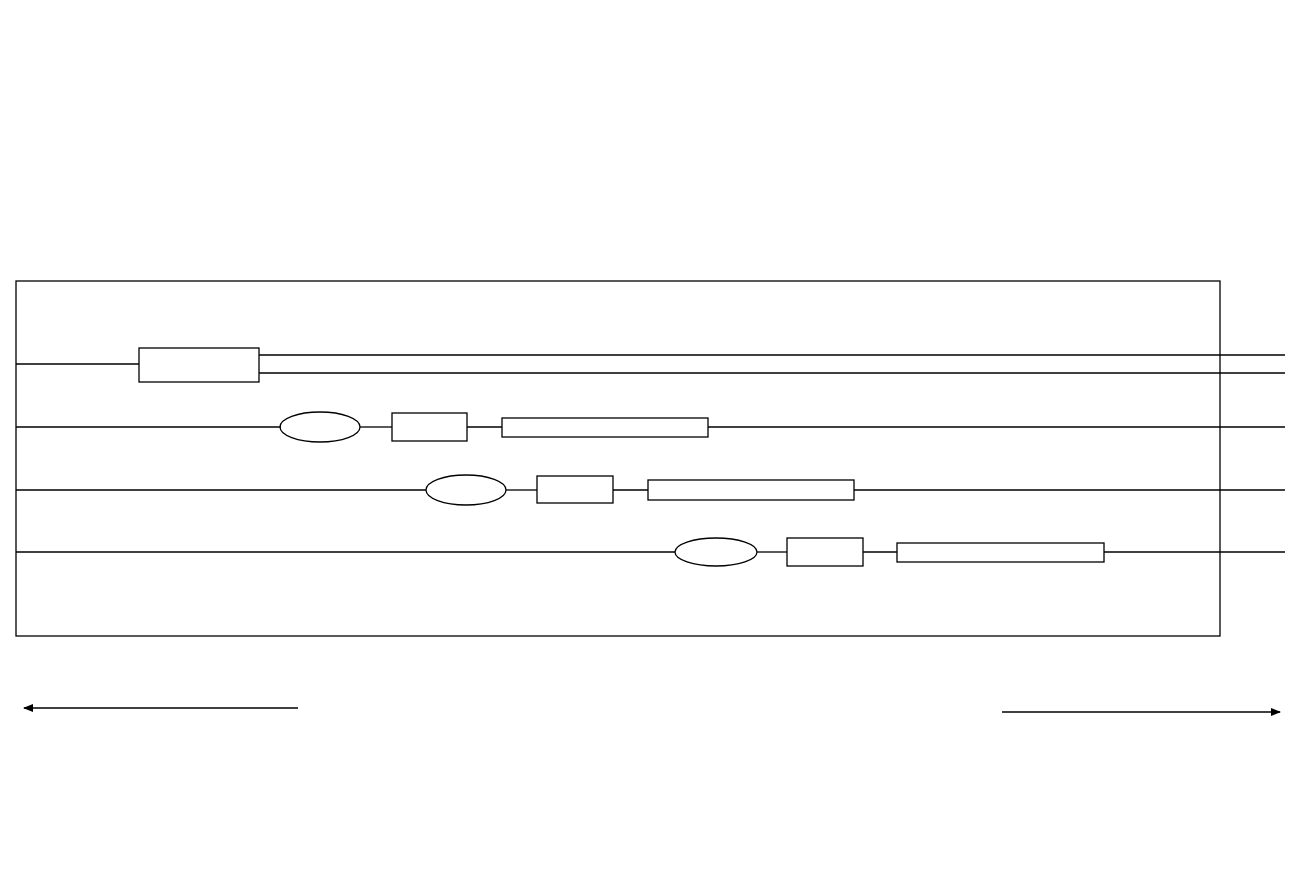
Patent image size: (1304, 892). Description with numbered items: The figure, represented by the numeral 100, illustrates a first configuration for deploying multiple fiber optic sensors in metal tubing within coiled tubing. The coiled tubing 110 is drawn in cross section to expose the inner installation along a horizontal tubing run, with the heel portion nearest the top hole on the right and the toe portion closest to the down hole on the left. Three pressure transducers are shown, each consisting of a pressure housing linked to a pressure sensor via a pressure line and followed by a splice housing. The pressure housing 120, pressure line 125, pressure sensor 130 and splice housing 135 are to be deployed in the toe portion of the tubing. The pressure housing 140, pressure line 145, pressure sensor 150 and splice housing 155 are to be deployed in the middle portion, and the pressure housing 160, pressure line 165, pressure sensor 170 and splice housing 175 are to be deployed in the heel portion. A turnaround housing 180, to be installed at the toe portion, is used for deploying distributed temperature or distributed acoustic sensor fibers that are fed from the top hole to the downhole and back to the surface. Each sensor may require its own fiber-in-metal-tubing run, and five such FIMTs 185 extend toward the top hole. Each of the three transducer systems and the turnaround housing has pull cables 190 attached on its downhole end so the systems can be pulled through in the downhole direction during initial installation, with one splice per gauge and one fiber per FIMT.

The first embodiment 100 is at (146, 148).
The coiled tubing 110 is at (587, 280).
The pressure housing 120 is at (300, 414).
The pressure line 125 is at (380, 427).
The pressure sensor 130 is at (432, 413).
The splice housing 135 is at (635, 418).
The pressure housing 140 is at (452, 503).
The pressure line 145 is at (520, 490).
The pressure sensor 150 is at (575, 476).
The splice housing 155 is at (780, 480).
The pressure housing 160 is at (722, 566).
The pressure line 165 is at (770, 552).
The pressure sensor 170 is at (810, 566).
The splice housing 175 is at (960, 562).
The turnaround housing 180 is at (220, 348).
The FIMT 185 is at (1033, 355).
The pull cables 190 is at (50, 364).